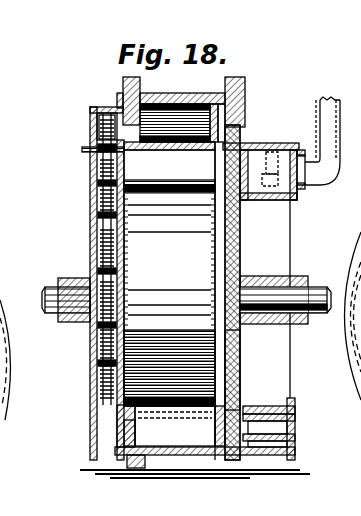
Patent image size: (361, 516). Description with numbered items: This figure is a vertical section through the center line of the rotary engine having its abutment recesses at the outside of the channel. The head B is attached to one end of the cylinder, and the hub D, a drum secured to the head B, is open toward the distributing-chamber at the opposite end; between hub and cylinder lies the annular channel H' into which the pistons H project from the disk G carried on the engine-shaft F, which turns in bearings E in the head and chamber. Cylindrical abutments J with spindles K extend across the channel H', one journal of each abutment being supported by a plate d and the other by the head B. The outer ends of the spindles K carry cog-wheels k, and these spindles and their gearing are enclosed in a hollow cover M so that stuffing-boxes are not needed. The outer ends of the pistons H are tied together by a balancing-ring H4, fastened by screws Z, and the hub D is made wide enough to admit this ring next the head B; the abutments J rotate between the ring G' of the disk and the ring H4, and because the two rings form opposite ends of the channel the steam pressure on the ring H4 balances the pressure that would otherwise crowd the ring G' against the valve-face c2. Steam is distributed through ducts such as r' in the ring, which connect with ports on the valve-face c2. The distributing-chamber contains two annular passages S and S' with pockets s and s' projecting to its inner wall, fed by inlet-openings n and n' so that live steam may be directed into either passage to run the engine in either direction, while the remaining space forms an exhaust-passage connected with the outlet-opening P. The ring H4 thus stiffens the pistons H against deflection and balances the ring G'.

The head B is at (122, 83).
The hollow cover M is at (89, 112).
The cog-wheels k is at (98, 130).
The spindles K is at (84, 151).
The balancing-ring H4 is at (90, 289).
The cylindrical abutments J is at (175, 123).
The pistons H is at (169, 164).
The plates d is at (216, 122).
The hub D is at (169, 296).
The disk G is at (241, 292).
The duct r' is at (261, 132).
The valve chamber p' is at (268, 282).
The pockets s' is at (279, 147).
The pockets s is at (261, 184).
The outlet-opening P is at (306, 196).
The bearings E is at (262, 286).
The engine-shaft F is at (318, 288).
The valve-face c2 is at (243, 370).
The screws Z is at (195, 432).
The ring G' is at (215, 454).
The annular channel H' is at (164, 461).
The inlet-opening n' is at (280, 421).
The inlet-opening n is at (278, 429).
The annular passage S is at (265, 462).
The annular passage S' is at (267, 472).